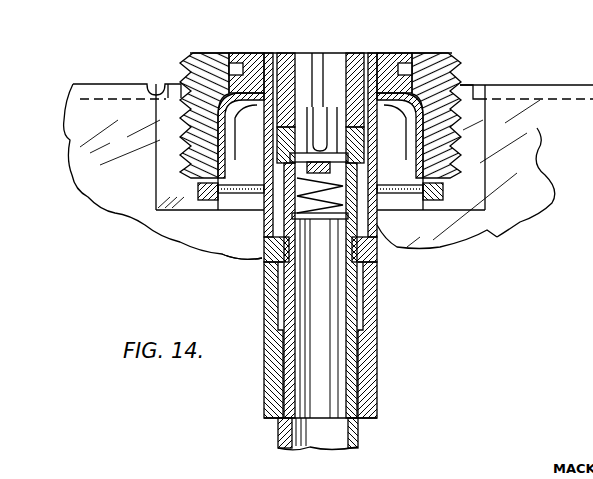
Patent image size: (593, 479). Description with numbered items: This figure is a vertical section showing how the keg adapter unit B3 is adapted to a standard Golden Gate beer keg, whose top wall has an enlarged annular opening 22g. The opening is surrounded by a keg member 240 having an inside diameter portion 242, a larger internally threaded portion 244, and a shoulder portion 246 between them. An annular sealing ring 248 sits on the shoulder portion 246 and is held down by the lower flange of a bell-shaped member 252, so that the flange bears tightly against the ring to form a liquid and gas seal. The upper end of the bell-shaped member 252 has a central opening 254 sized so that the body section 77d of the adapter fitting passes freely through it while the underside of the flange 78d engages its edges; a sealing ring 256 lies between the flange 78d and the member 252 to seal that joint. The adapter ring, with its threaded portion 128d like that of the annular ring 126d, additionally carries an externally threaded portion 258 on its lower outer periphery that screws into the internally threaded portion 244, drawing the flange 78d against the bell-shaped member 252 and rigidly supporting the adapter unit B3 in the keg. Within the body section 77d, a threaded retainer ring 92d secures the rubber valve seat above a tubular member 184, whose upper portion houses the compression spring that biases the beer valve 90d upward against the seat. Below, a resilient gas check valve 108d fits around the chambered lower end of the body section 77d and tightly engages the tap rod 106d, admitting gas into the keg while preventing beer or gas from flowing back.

The annular opening 22g is at (153, 86).
The body section 77d is at (374, 262).
The flange 78d is at (246, 60).
The beer valve 90d is at (322, 92).
The retainer ring 92d is at (352, 54).
The tap rod 106d is at (360, 440).
The gas check valve 108d is at (370, 347).
The annular ring 126d is at (463, 52).
The threaded portion 128d is at (182, 82).
The tubular member 184 is at (350, 312).
The keg member 240 is at (167, 153).
The inside diameter portion 242 is at (215, 205).
The internally threaded portion 244 is at (456, 153).
The shoulder portion 246 is at (470, 214).
The annular sealing ring 248 is at (218, 190).
The bell-shaped member 252 is at (450, 87).
The central opening 254 is at (392, 106).
The sealing ring 256 is at (393, 64).
The externally threaded portion 258 is at (167, 125).
The keg adapter unit B3 is at (241, 262).